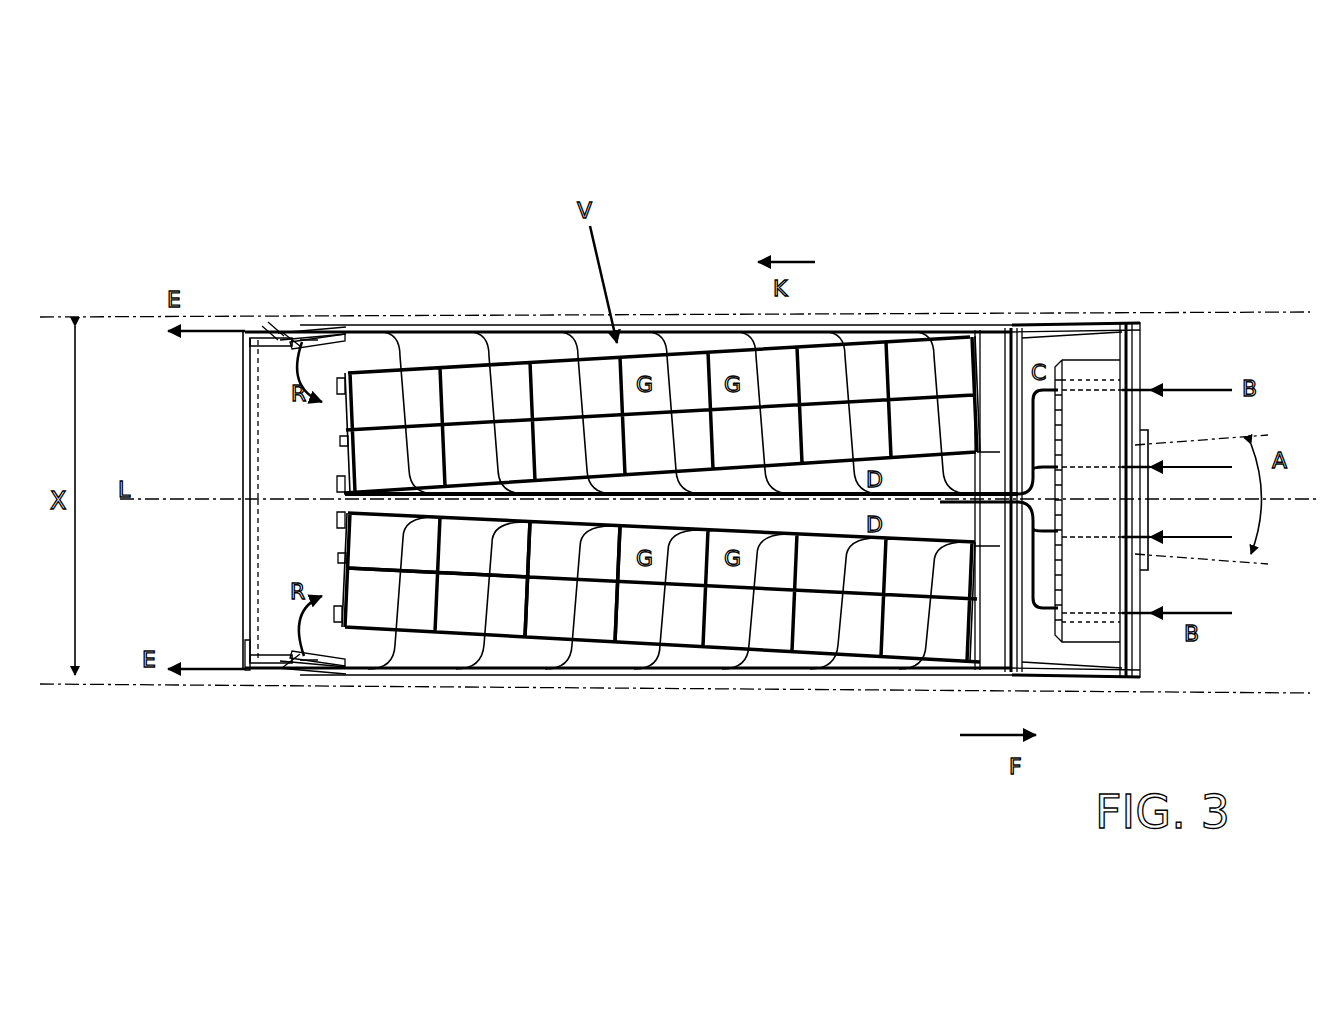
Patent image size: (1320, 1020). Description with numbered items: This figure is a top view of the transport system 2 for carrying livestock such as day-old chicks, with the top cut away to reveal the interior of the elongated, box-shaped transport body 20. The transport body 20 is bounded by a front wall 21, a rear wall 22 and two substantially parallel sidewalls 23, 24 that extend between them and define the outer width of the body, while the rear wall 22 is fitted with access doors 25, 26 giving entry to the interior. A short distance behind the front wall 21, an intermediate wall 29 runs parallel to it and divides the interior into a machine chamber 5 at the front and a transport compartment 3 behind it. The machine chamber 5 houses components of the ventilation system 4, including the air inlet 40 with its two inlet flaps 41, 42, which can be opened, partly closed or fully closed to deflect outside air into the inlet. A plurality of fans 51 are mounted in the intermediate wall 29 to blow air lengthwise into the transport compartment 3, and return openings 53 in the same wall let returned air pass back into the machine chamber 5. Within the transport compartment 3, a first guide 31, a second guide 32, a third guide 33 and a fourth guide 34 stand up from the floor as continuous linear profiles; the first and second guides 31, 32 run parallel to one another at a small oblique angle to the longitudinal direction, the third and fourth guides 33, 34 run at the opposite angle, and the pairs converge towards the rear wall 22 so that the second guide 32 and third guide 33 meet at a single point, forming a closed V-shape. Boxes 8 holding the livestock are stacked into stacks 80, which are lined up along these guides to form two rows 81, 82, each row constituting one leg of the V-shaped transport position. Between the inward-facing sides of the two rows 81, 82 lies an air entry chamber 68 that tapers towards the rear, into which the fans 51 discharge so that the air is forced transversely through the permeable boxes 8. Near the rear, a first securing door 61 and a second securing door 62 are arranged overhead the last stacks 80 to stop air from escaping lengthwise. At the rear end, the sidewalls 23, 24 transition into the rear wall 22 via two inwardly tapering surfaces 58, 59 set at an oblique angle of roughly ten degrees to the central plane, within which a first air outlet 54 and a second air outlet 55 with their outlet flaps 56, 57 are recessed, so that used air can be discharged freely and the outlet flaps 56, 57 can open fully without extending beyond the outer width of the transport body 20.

The transport system 2 is at (304, 183).
The transport compartment 3 is at (286, 330).
The ventilation system 4 is at (1136, 216).
The machine chamber 5 is at (1100, 328).
The boxes 8 is at (810, 640).
The transport body 20 is at (410, 326).
The front wall 21 is at (1142, 335).
The rear wall 22 is at (246, 634).
The sidewall 23 is at (640, 630).
The sidewall 24 is at (493, 328).
The access door 25 is at (246, 412).
The access door 26 is at (246, 578).
The intermediate wall 29 is at (1032, 340).
The first guide 31 is at (290, 676).
The second guide 32 is at (338, 520).
The third guide 33 is at (338, 485).
The fourth guide 34 is at (326, 332).
The air inlet 40 is at (1130, 380).
The inlet flap 41 is at (1100, 412).
The inlet flap 42 is at (1100, 580).
The fans 51 is at (972, 462).
The return openings 53 is at (1010, 330).
The first air outlet 54 is at (256, 672).
The second air outlet 55 is at (252, 330).
The outlet flap 56 is at (324, 680).
The outlet flap 57 is at (272, 322).
The tapering surface 58 is at (300, 668).
The tapering surface 59 is at (298, 333).
The first securing door 61 is at (342, 545).
The second securing door 62 is at (340, 444).
The air entry chamber 68 is at (838, 533).
The stacks 80 is at (545, 630).
The row 81 is at (724, 636).
The row 82 is at (683, 370).